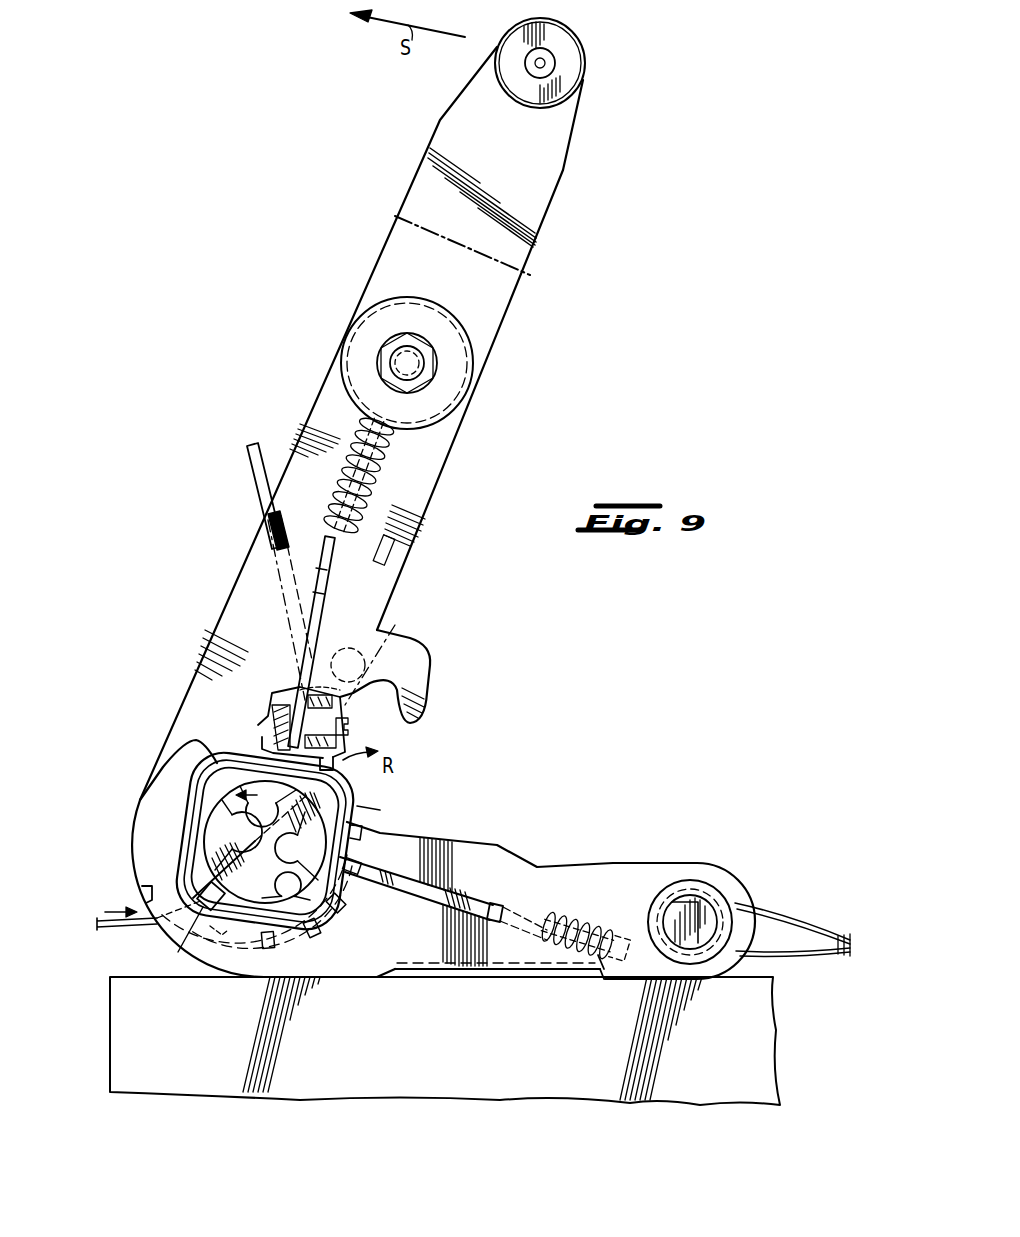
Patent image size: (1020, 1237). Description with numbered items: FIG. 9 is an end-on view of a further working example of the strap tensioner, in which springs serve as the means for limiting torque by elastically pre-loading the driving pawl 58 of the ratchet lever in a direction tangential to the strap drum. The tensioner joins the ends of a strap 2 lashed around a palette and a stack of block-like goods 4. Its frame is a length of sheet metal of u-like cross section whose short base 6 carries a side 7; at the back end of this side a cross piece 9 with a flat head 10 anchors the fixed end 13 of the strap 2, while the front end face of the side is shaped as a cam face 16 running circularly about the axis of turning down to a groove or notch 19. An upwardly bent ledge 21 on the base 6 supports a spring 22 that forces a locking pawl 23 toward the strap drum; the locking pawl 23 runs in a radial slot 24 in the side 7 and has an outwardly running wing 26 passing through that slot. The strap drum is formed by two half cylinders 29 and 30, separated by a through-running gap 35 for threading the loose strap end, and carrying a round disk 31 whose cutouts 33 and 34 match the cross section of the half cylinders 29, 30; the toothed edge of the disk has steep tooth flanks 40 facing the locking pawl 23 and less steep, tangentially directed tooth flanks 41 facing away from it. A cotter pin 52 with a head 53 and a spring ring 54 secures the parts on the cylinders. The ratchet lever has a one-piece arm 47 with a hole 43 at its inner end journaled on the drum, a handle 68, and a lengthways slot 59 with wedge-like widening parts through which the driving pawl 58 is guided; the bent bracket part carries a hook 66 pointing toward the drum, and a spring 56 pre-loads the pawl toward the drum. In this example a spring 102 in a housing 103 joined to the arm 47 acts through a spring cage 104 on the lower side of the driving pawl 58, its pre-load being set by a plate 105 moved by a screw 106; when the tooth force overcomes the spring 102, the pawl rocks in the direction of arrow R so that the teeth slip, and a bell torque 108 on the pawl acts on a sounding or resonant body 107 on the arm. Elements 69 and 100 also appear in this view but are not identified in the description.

The strap 2 is at (104, 932).
The block-like goods 4 is at (760, 1007).
The base 6 is at (512, 973).
The side 7 is at (381, 955).
The cross piece 9 is at (680, 910).
The flat head 10 is at (704, 880).
The fixed end of the strap 13 is at (775, 918).
The cam face 16 is at (143, 797).
The groove or notch 19 is at (140, 893).
The upwardly bent ledge 21 is at (607, 972).
The spring 22 is at (594, 920).
The locking pawl 23 is at (395, 868).
The slot 24 is at (497, 903).
The wing 26 is at (470, 893).
The half cylinder 29 is at (212, 845).
The half cylinder 30 is at (237, 792).
The round disk 31 is at (290, 864).
The cutout 33 is at (300, 915).
The cutout 34 is at (317, 850).
The gap 35 is at (340, 904).
The tooth flank 40 is at (357, 813).
The tooth flank 41 is at (347, 788).
The hole 43 is at (265, 932).
The arm 47 is at (219, 705).
The cotter pin 52 is at (192, 874).
The head 53 is at (178, 953).
The spring ring 54 is at (196, 815).
The spring 56 is at (345, 458).
The driving pawl 58 is at (300, 640).
The lengthways slot 59 is at (322, 597).
The hook 66 is at (415, 716).
The handle 68 is at (258, 475).
The guide pulley 69 is at (570, 60).
The disc 100 is at (453, 387).
The spring 102 is at (263, 737).
The housing 103 is at (337, 740).
The spring cage 104 is at (280, 707).
The plate 105 is at (357, 677).
The screw 106 is at (350, 722).
The sounding or resonant body 107 is at (377, 650).
The bell torque 108 is at (290, 668).